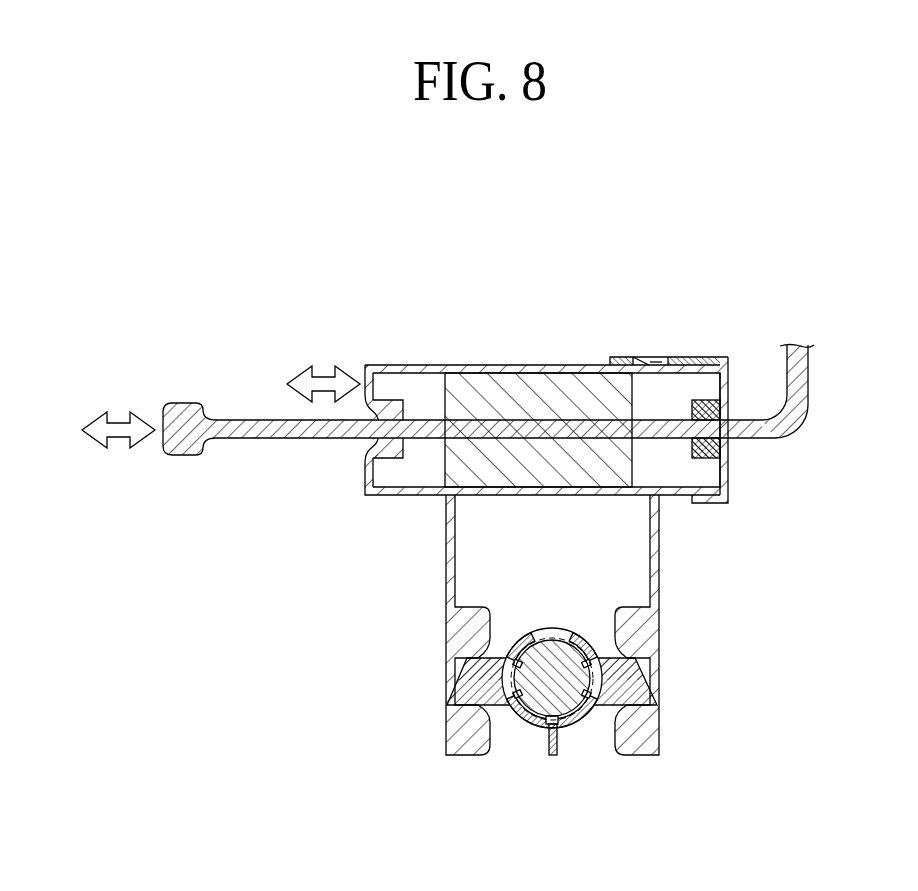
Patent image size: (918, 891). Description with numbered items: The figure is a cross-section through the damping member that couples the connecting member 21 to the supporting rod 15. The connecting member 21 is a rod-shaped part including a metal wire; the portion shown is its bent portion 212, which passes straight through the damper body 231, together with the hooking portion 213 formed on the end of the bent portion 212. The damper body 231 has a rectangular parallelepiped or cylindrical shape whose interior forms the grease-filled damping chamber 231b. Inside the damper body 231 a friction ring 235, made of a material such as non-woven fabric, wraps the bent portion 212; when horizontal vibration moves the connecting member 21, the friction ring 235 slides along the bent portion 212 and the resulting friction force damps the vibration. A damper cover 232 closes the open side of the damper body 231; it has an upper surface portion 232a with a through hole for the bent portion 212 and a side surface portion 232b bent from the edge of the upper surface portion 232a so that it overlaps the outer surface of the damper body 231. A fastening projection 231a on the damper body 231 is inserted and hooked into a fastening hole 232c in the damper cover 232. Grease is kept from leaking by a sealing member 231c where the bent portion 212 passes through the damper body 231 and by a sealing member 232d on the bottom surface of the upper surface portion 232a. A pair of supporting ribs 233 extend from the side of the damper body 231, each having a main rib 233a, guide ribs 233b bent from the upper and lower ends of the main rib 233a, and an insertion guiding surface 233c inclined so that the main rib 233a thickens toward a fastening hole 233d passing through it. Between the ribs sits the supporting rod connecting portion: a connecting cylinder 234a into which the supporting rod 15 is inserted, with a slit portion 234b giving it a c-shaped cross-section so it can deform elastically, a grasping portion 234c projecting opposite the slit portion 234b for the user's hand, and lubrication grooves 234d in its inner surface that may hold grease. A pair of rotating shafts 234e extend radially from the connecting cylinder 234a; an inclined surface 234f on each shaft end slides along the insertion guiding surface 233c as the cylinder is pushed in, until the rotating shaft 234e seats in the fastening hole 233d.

The connecting member 21 is at (488, 378).
The bent portion 212 is at (248, 420).
The hooking portion 213 is at (185, 403).
The damper body 231 is at (535, 390).
The fastening projection 231a is at (640, 357).
The inner space 231b is at (425, 386).
The sealing member 231c is at (390, 403).
The damper cover 232 is at (708, 357).
The upper surface portion 232a is at (731, 380).
The side surface portion 232b is at (683, 362).
The fastening hole 232c is at (659, 361).
The sealing member 232d is at (713, 364).
The friction ring 235 is at (522, 390).
The supporting rib 233 is at (626, 627).
The main rib 233a is at (661, 553).
The guide rib 233b is at (635, 610).
The insertion guiding surface 233c is at (640, 730).
The fastening hole 233d is at (602, 681).
The connecting cylinder 234a is at (530, 725).
The slit portion 234b is at (555, 640).
The grasping portion 234c is at (553, 757).
The lubrication groove 234d is at (505, 708).
The rotating shaft 234e is at (497, 680).
The inclined surface 234f is at (458, 688).
The supporting rod 15 is at (585, 725).